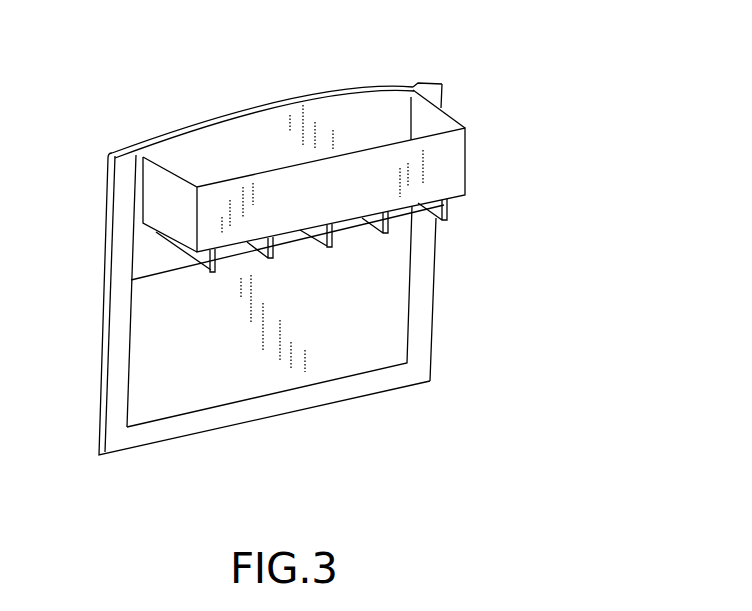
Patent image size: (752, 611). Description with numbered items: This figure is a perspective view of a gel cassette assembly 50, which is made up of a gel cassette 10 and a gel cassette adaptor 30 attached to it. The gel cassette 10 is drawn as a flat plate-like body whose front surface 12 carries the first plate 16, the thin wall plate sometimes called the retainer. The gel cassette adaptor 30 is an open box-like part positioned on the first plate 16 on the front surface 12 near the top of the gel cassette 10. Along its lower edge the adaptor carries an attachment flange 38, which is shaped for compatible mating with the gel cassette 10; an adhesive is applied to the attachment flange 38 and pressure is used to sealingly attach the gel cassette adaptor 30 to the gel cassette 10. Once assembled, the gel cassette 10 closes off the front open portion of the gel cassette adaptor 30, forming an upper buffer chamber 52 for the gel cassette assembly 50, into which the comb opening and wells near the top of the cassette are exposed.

The gel cassette 10 is at (458, 264).
The front surface 12 is at (151, 290).
The first plate 16 is at (373, 332).
The gel cassette adaptor 30 is at (488, 146).
The attachment flange 38 is at (147, 255).
The gel cassette assembly 50 is at (550, 226).
The upper buffer chamber 52 is at (252, 132).